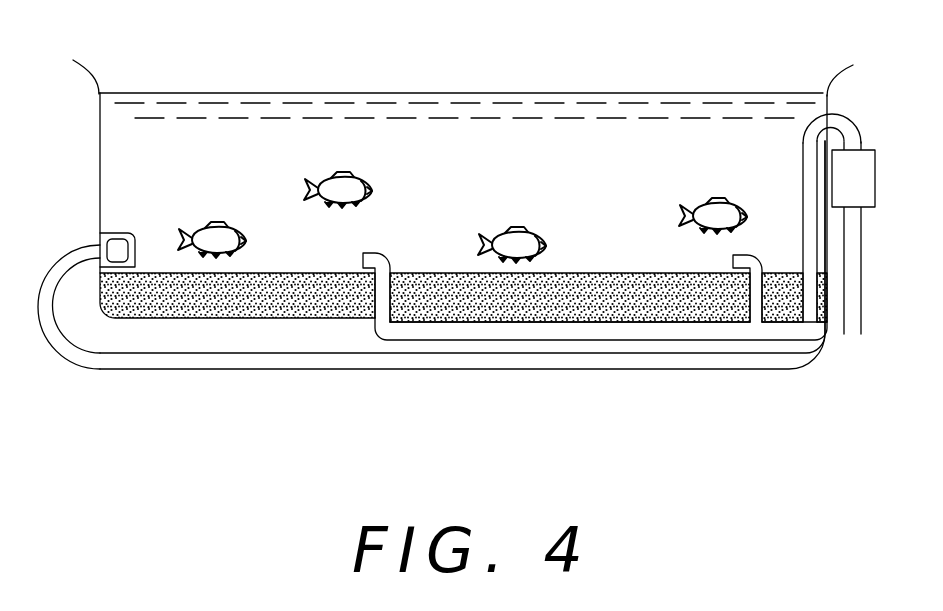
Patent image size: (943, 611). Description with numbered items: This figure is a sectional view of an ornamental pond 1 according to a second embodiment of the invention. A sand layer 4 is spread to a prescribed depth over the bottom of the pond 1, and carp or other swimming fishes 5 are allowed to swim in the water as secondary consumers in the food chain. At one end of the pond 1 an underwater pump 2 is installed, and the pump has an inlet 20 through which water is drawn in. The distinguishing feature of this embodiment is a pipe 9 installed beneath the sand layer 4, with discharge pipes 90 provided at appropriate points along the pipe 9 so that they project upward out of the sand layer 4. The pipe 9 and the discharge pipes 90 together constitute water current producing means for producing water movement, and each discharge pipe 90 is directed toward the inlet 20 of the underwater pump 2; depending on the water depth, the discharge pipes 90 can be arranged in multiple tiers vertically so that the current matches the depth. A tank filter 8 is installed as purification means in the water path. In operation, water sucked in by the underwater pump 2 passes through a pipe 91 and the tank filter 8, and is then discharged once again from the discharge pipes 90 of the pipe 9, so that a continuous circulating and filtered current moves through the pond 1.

The pond 1 is at (474, 176).
The underwater pump 2 is at (113, 252).
The sand layer 4 is at (569, 298).
The swimming fishes 5 is at (343, 165).
The tank filter 8 is at (863, 162).
The pipe 9 is at (585, 356).
The inlet 20 is at (135, 258).
The discharge pipes 90 is at (378, 297).
The pipe 91 is at (250, 362).